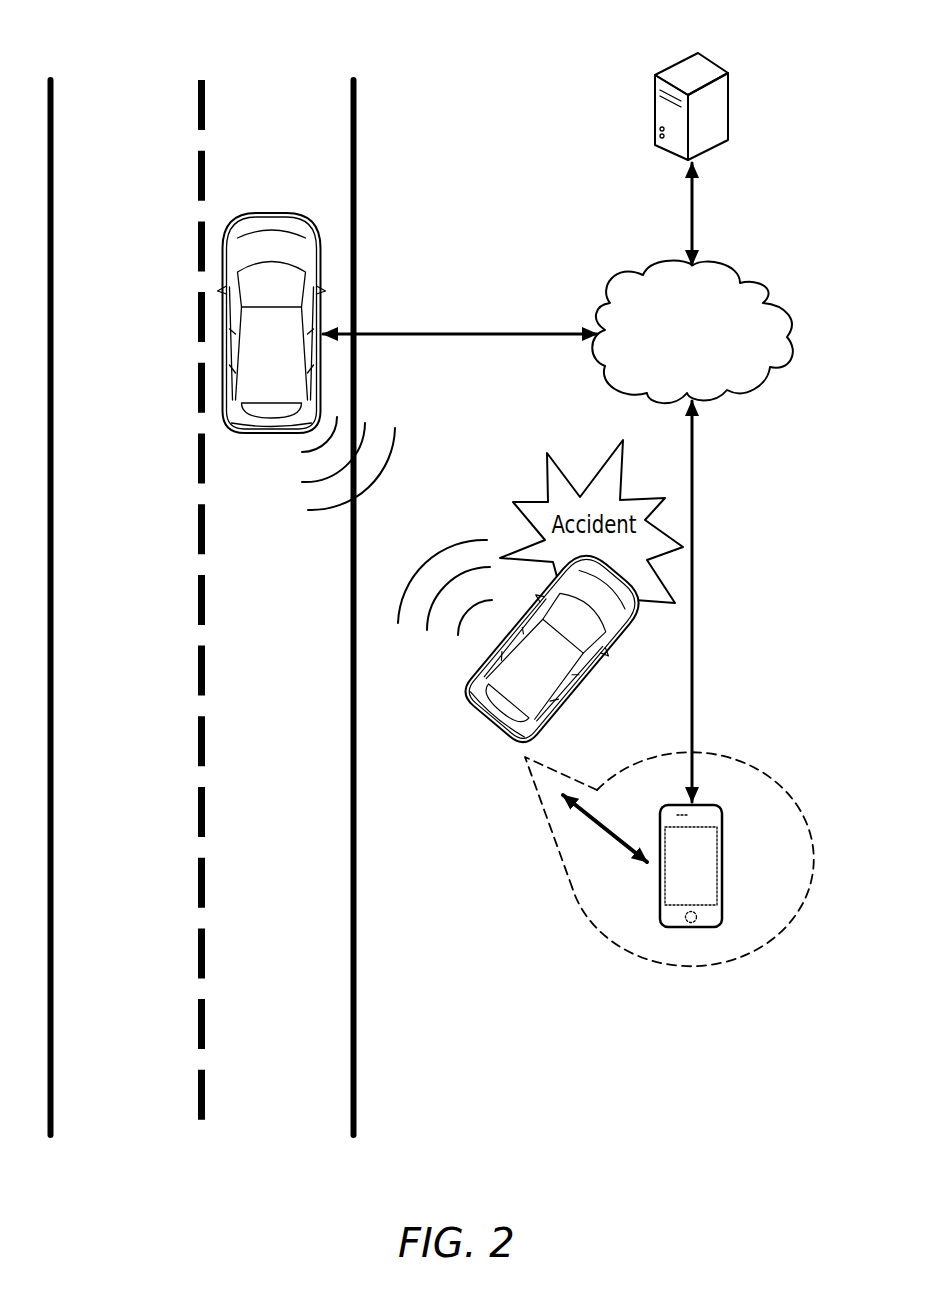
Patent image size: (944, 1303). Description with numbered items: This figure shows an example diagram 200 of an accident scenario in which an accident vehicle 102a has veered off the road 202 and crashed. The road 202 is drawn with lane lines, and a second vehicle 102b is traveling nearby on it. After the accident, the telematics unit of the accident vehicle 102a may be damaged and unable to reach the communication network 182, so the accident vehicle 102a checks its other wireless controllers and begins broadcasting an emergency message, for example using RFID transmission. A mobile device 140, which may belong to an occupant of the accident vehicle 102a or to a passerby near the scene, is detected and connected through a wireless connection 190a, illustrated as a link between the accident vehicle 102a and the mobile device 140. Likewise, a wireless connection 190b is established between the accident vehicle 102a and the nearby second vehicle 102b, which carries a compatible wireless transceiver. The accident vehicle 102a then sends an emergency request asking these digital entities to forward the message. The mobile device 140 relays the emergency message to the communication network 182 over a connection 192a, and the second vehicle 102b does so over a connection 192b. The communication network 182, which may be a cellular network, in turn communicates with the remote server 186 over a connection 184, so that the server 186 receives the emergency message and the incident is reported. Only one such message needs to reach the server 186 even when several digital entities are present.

The accident detection environment 200 is at (214, 40).
The road 202 is at (323, 1017).
The second vehicle 102b is at (269, 212).
The accident vehicle 102a is at (483, 735).
The wireless connection 190b is at (403, 600).
The wireless connection 190a is at (610, 840).
The network connection of mobile device 192a is at (697, 533).
The network connection of second vehicle 192b is at (492, 331).
The communication network 182 is at (794, 309).
The server network connection 184 is at (697, 212).
The remote server 186 is at (735, 84).
The mobile device 140 is at (727, 838).